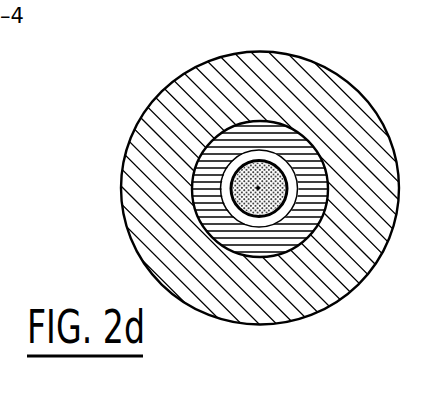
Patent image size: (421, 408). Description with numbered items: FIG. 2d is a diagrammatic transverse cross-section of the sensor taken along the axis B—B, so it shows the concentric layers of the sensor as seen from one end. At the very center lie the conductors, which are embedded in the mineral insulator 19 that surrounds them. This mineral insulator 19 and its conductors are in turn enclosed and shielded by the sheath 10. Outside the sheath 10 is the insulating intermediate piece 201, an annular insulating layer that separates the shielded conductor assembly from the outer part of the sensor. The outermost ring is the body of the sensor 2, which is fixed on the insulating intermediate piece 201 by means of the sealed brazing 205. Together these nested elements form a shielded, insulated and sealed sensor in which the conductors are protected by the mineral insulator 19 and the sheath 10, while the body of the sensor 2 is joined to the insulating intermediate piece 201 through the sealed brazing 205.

The body of the sensor 2 is at (345, 117).
The insulating intermediate piece 201 is at (292, 228).
The sealed brazing 205 is at (294, 128).
The sheath 10 is at (227, 208).
The mineral insulator 19 is at (242, 188).